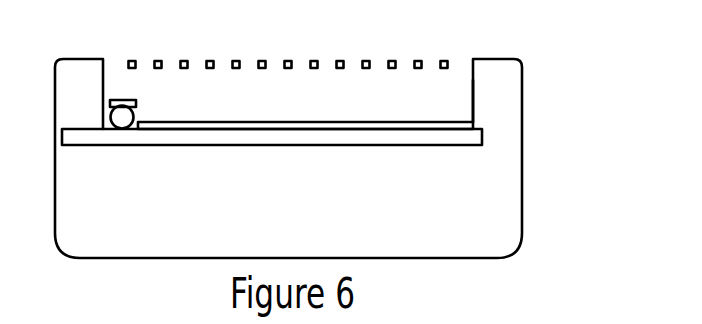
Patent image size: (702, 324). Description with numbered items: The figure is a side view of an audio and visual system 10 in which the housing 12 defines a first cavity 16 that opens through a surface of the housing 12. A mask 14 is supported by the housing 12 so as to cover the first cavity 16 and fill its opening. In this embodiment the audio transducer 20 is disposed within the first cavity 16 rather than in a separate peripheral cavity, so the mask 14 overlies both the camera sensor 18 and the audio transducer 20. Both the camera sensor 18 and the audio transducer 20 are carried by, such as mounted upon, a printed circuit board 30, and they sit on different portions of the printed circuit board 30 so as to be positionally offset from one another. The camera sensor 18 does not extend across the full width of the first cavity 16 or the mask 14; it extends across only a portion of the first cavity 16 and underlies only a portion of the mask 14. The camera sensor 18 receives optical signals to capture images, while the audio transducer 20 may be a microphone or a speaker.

The audio and visual system 10 is at (527, 42).
The housing 12 is at (510, 82).
The mask 14 is at (365, 59).
The first cavity 16 is at (437, 100).
The camera sensor 18 is at (352, 125).
The audio transducer 20 is at (122, 117).
The printed circuit board 30 is at (392, 138).